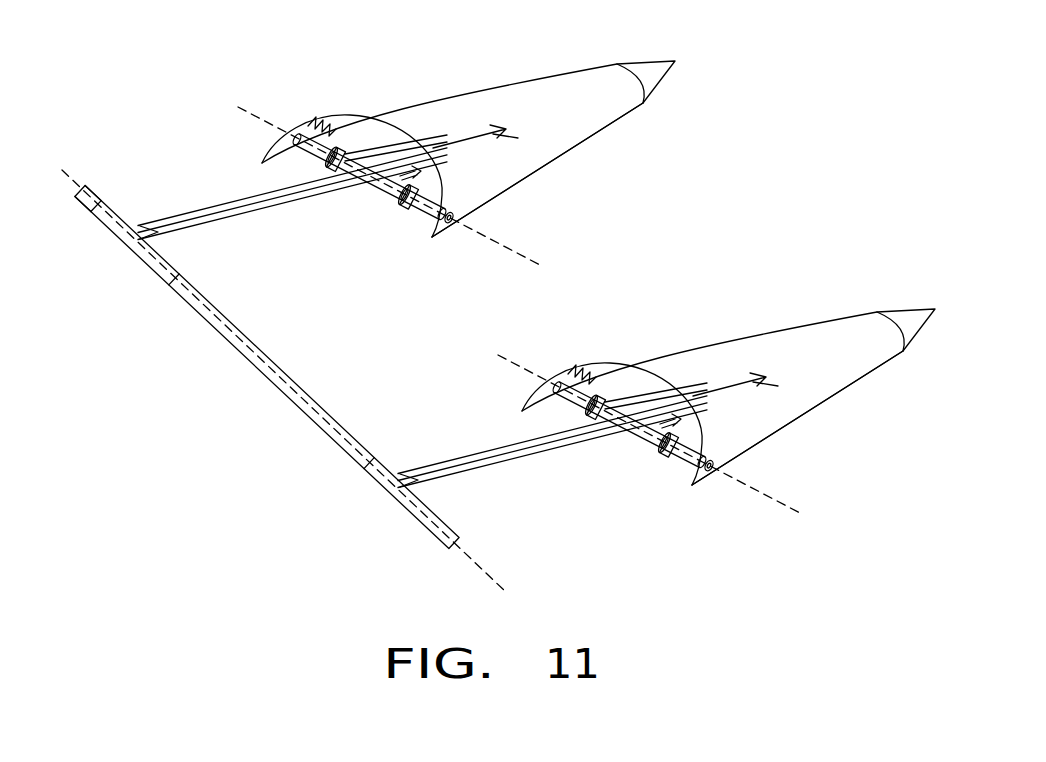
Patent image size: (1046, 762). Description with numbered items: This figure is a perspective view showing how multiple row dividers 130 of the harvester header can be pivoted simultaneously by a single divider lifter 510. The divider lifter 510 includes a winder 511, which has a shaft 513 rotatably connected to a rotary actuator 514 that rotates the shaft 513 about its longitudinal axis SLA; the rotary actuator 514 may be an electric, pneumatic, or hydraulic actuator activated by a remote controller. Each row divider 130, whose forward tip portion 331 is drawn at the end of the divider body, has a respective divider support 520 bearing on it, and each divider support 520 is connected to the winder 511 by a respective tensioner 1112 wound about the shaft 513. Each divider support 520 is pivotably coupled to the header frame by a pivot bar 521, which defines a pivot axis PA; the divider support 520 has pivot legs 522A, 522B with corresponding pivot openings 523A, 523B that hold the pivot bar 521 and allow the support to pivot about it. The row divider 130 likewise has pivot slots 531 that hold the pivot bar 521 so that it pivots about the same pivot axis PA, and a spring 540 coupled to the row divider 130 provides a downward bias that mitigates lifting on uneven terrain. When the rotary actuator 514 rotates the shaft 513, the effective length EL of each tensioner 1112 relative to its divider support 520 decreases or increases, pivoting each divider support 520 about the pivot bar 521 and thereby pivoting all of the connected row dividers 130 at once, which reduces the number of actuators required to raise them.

The row divider 130 is at (536, 80).
The cone tip cap 331 is at (648, 61).
The divider lifter 510 is at (218, 248).
The winder 511 is at (135, 210).
The shaft 513 is at (126, 244).
The rotary actuator 514 is at (96, 188).
The divider support 520 is at (392, 183).
The pivot bar 521 is at (367, 194).
The pivot leg 522A is at (386, 150).
The pivot leg 522B is at (446, 172).
The pivot opening 523A is at (341, 147).
The pivot opening 523B is at (401, 213).
The pivot slot 531 is at (295, 141).
The spring 540 is at (315, 118).
The tensioner 1112 is at (256, 212).
The effective length EL is at (263, 195).
The pivot axis PA is at (509, 247).
The longitudinal axis SLA is at (483, 572).